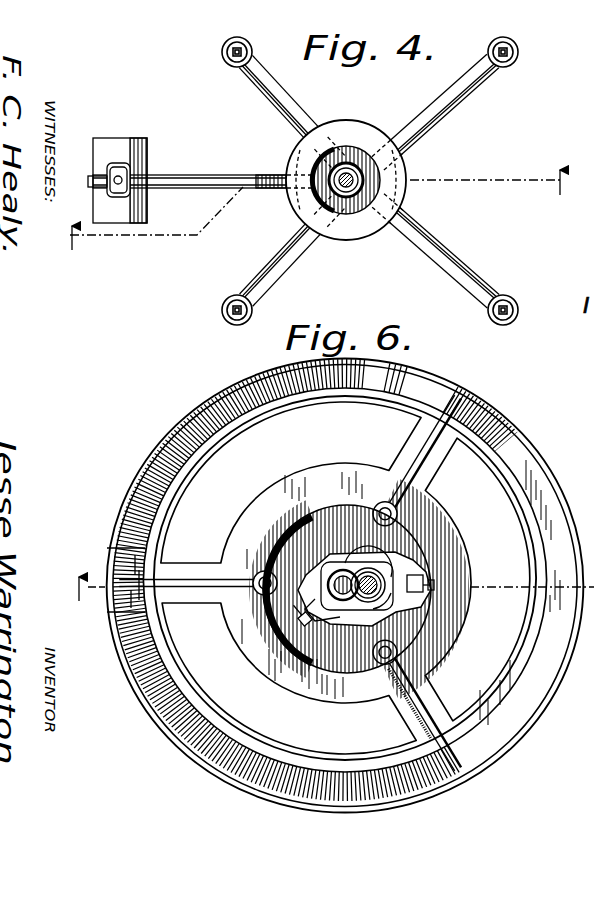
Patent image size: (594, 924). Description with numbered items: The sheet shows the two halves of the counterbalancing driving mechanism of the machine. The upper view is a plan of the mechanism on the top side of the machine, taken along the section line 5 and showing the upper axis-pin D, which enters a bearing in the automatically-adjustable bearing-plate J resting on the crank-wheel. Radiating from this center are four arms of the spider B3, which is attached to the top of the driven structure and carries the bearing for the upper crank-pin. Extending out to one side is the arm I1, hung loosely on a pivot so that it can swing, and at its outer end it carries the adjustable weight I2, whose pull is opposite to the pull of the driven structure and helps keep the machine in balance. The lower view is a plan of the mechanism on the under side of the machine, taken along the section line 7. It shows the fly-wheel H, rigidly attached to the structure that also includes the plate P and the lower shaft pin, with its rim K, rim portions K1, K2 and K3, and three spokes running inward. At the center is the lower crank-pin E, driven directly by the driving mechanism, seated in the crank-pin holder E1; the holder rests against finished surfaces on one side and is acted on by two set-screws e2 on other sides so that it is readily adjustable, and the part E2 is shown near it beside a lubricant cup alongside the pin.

In FIG. 4, the spider B3 is at (315, 103).
In FIG. 4, the bearing-plate J is at (360, 130).
In FIG. 4, the upper axis-pin D is at (300, 212).
In FIG. 4, the arm I1 is at (213, 177).
In FIG. 4, the weight I2 is at (125, 140).
In FIG. 4, the section line 5 5 is at (318, 210).
In FIG. 6, the rim K is at (225, 395).
In FIG. 6, the rim inner flange K1 is at (152, 487).
In FIG. 6, the rim band K2 is at (108, 566).
In FIG. 6, the rim insert section K3 is at (128, 642).
In FIG. 6, the fly-wheel H is at (297, 683).
In FIG. 6, the plate P is at (367, 550).
In FIG. 6, the crank-pin E is at (365, 557).
In FIG. 6, the crank-pin holder E1 is at (333, 577).
In FIG. 6, the bearing cap E2 is at (364, 598).
In FIG. 6, the set-screws e2 is at (328, 584).
In FIG. 6, the section line 7 7 is at (323, 589).